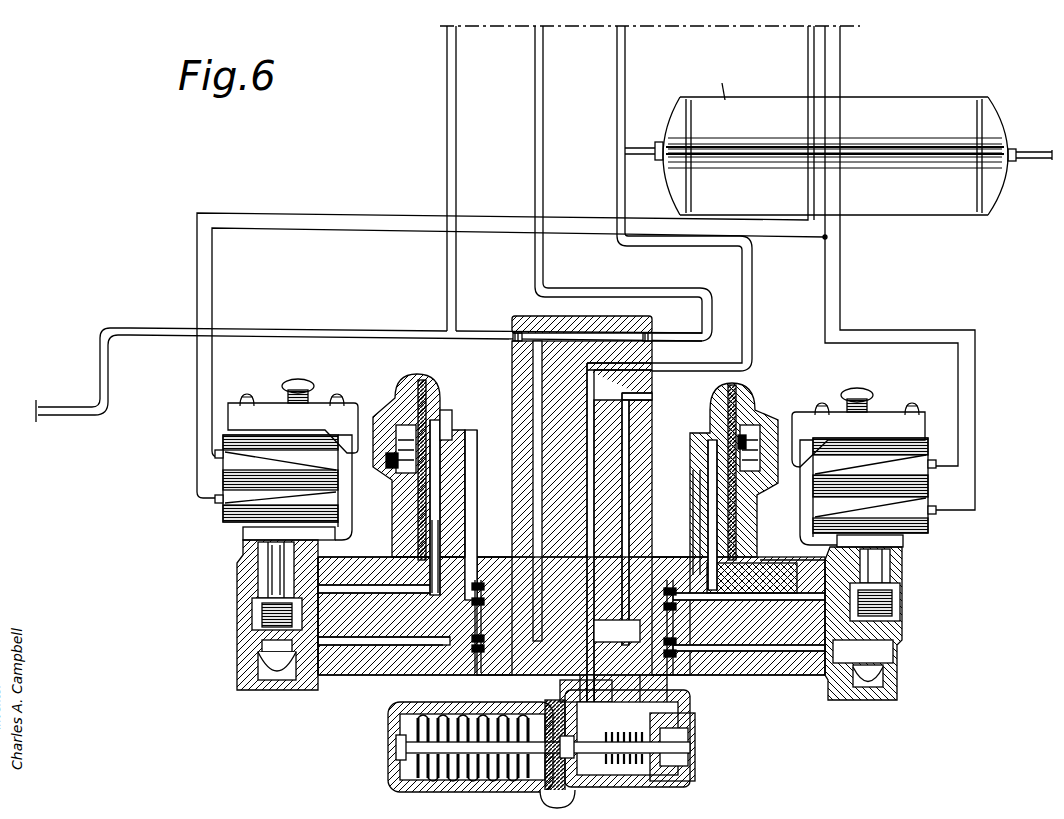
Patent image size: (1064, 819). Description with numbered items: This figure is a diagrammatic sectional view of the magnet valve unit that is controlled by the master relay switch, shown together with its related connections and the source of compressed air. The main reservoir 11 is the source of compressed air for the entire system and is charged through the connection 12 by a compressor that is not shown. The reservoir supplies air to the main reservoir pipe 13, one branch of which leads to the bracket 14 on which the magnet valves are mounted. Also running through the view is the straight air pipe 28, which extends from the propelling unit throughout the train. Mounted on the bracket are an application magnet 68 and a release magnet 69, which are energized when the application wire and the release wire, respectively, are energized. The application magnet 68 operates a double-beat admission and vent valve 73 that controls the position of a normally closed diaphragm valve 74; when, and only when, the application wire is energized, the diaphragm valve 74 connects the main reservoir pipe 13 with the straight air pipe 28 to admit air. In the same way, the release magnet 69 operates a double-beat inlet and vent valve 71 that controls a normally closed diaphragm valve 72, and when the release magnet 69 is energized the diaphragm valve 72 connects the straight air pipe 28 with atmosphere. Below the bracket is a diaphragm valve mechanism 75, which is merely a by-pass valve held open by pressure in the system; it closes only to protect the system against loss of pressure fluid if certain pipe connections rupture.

The main reservoir 11 is at (887, 100).
The connection 12 is at (1022, 150).
The main reservoir pipe 13 is at (626, 107).
The bracket 14 is at (518, 316).
The straight air pipe 28 is at (446, 125).
The application magnet 68 is at (215, 480).
The release magnet 69 is at (930, 488).
The double-beat inlet and vent valve 71 is at (886, 602).
The diaphragm valve 72 is at (722, 405).
The double-beat admission and vent valve 73 is at (262, 598).
The diaphragm valve 74 is at (490, 410).
The diaphragm valve mechanism 75 is at (597, 797).